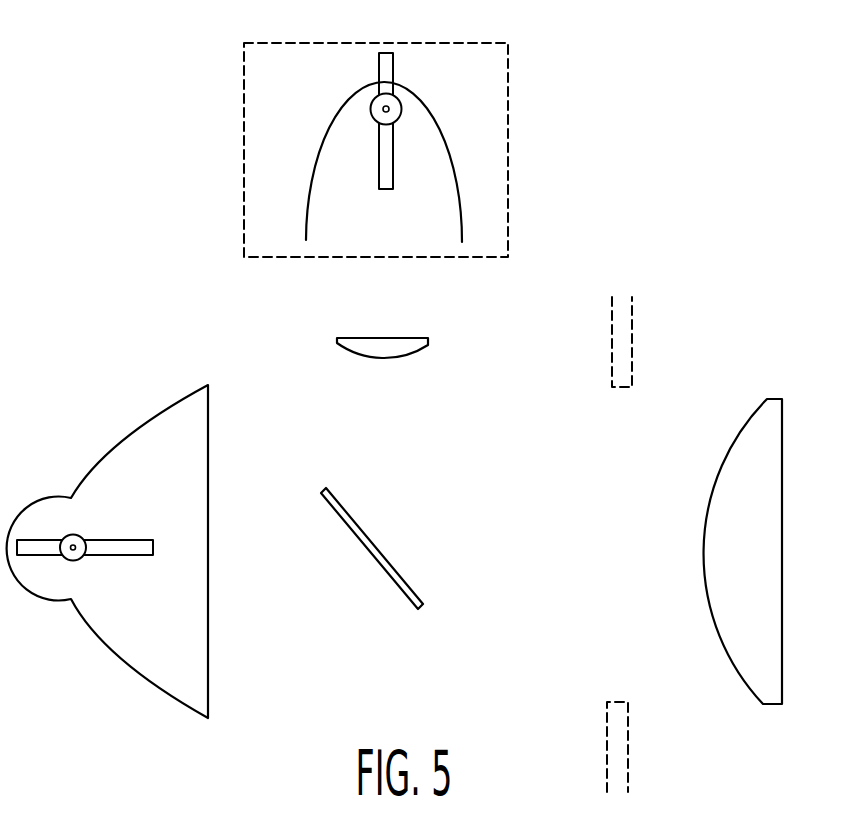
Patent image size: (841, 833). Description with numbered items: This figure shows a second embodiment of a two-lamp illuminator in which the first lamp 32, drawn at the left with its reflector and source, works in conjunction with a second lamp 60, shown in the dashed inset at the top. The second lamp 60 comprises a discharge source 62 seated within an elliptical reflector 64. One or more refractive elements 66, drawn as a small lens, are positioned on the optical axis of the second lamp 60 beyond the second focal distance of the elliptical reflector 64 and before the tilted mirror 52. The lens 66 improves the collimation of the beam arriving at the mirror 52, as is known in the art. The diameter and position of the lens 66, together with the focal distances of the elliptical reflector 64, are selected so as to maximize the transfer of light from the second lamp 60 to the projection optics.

The lamp 32 is at (122, 440).
The mirror 52 is at (397, 585).
The second lamp 60 is at (470, 85).
The discharge source 62 is at (371, 106).
The elliptical reflector 64 is at (320, 155).
The refractive element 66 is at (415, 337).